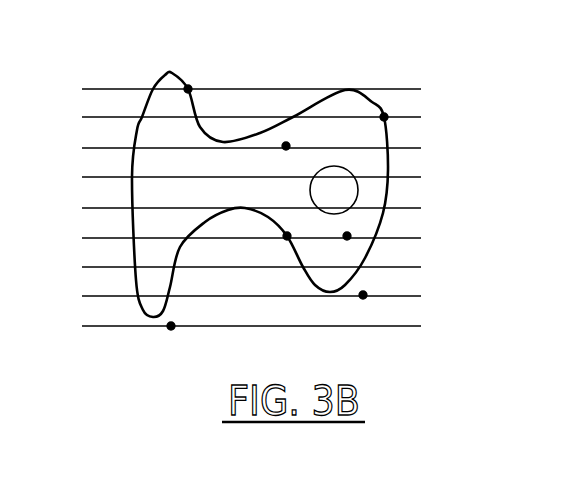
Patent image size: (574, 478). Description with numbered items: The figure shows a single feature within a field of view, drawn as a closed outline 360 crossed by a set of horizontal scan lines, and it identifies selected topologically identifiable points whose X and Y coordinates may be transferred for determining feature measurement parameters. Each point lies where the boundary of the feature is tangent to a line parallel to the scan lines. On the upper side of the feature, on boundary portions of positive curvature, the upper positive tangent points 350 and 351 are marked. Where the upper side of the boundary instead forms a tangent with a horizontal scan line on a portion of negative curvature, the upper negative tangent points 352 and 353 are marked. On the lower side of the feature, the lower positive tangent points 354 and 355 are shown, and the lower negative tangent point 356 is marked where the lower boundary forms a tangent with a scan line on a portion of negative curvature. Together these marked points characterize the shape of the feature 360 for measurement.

The object outline 360 is at (347, 90).
The upper positive tangent point 350 is at (188, 89).
The upper positive tangent point 351 is at (384, 117).
The upper negative tangent point 352 is at (286, 146).
The upper negative tangent point 353 is at (347, 236).
The lower positive tangent point 354 is at (363, 295).
The lower positive tangent point 355 is at (171, 326).
The lower negative tangent point 356 is at (287, 236).